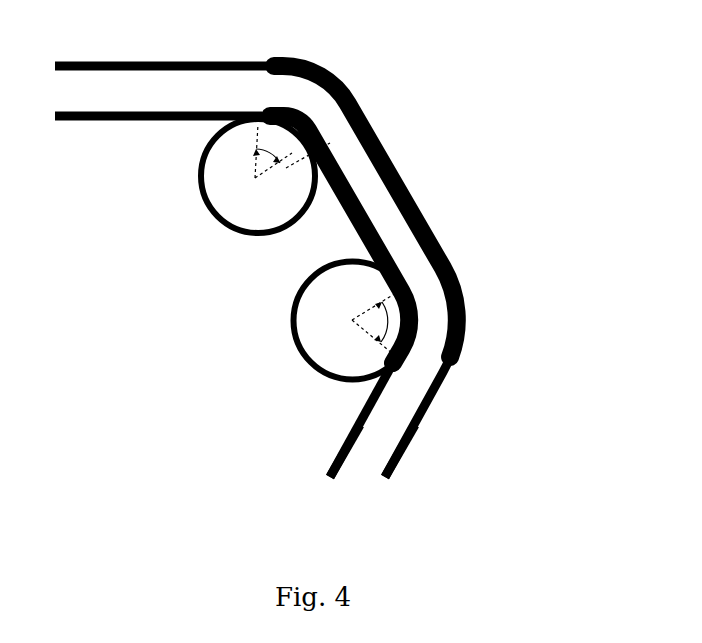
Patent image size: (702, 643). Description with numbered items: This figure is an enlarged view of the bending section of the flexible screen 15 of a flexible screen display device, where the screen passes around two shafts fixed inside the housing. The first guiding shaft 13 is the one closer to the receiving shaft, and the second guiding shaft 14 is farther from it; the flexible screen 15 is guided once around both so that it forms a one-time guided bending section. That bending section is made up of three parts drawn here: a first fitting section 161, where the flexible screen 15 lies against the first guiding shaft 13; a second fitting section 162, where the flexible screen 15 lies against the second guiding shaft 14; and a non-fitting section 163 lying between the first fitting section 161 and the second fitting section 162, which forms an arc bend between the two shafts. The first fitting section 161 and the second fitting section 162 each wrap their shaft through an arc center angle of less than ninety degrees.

The first fitting section 161 is at (437, 328).
The second fitting section 162 is at (283, 107).
The non-fitting section 163 is at (373, 195).
The second guiding shaft 14 is at (237, 222).
The first guiding shaft 13 is at (292, 382).
The flexible screen 15 is at (357, 443).